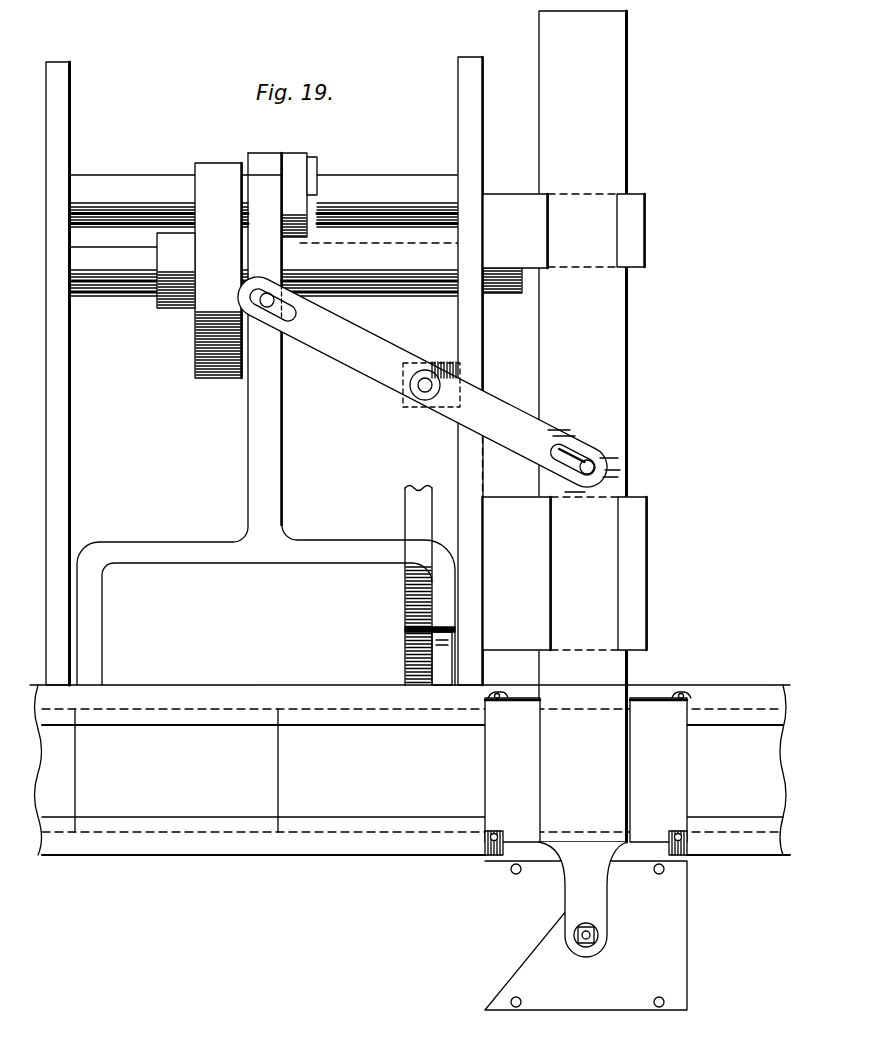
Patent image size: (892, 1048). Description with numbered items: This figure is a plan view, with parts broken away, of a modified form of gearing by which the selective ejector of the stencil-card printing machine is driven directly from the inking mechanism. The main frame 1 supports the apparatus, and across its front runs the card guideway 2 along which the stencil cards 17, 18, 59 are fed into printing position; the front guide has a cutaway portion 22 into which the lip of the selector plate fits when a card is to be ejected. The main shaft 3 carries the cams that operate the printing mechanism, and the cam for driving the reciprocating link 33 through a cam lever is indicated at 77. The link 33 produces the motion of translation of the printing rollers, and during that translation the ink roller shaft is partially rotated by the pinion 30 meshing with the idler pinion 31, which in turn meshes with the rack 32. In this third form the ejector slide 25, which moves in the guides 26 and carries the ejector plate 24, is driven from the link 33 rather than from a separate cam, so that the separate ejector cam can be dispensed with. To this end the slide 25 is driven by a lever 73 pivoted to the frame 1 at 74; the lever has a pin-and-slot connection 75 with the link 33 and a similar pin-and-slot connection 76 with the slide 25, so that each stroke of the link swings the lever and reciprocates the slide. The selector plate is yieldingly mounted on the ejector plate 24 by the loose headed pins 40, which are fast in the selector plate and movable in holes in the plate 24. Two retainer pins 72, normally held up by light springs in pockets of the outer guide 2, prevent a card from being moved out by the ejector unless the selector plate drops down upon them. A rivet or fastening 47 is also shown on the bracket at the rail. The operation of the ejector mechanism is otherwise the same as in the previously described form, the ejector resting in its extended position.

The main frame 1 is at (82, 482).
The card guideway 2 is at (185, 692).
The main shaft 3 is at (440, 285).
The stencil card 17 is at (234, 812).
The stencil card 18 is at (392, 812).
The cutaway portion 22 is at (525, 836).
The ejector plate 24 is at (675, 957).
The transversely sliding piece 25 is at (612, 433).
The guides 26 is at (638, 628).
The pinion 30 is at (405, 670).
The idler pinion 31 is at (405, 640).
The rack 32 is at (405, 594).
The link 33 is at (277, 466).
The loose headed pins 40 is at (511, 870).
The rivet 47 is at (512, 702).
The stencil card 59 is at (648, 682).
The retainer pins 72 is at (494, 834).
The lever 73 is at (360, 358).
The pivot 74 is at (420, 392).
The pin-and-slot connection 75 is at (270, 294).
The pin-and-slot connection 76 is at (587, 462).
The cam 77 is at (195, 355).